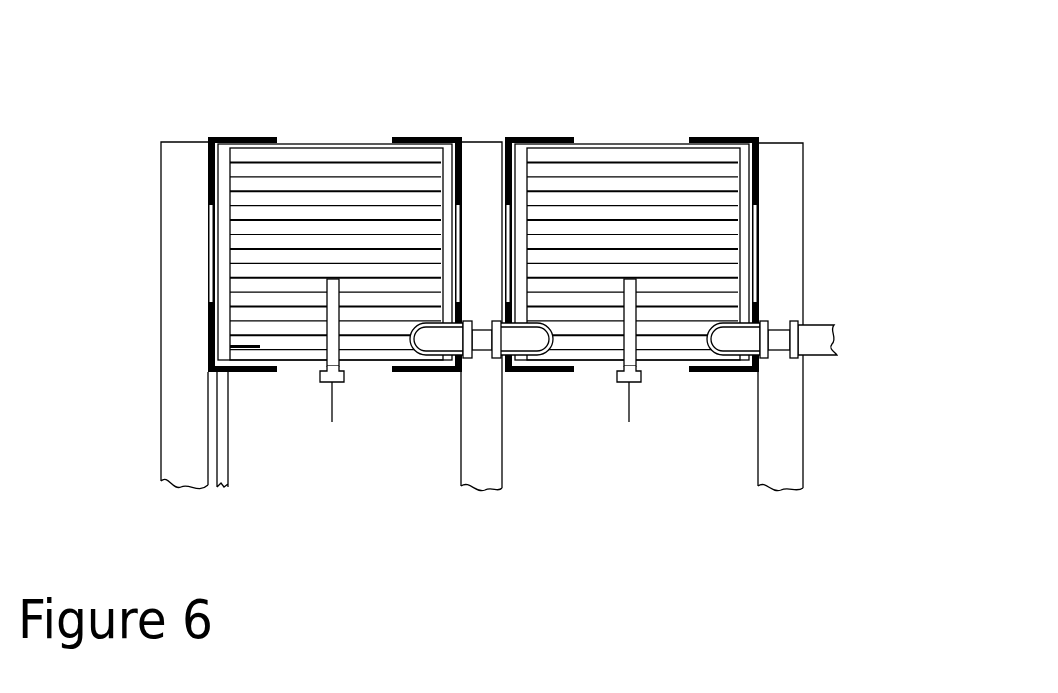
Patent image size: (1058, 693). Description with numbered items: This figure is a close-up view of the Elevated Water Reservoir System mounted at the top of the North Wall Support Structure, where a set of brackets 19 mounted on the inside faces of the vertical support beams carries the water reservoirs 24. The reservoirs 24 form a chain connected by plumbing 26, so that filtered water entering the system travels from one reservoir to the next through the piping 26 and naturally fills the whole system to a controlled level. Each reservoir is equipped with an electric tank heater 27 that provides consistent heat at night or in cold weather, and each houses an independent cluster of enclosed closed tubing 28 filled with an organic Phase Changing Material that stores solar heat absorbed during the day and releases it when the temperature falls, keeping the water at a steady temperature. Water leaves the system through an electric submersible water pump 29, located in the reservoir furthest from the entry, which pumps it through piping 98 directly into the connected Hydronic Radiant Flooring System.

The brackets 19 is at (246, 136).
The water reservoirs 24 is at (476, 259).
The plumbing 26 is at (480, 340).
The electric tank heaters 27 is at (333, 382).
The enclosed PVC piping filled with Phase Changing Material 28 is at (293, 182).
The electric submersible water pump 29 is at (251, 348).
The piping 98 is at (222, 452).